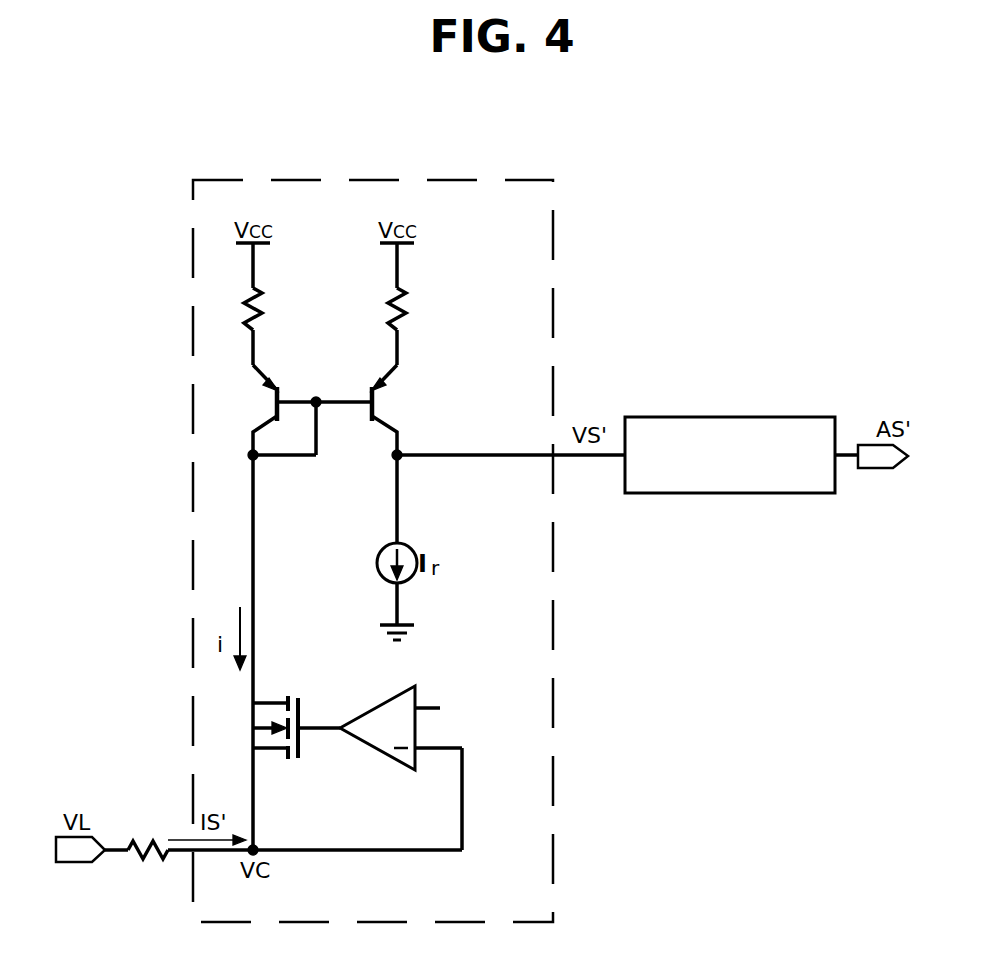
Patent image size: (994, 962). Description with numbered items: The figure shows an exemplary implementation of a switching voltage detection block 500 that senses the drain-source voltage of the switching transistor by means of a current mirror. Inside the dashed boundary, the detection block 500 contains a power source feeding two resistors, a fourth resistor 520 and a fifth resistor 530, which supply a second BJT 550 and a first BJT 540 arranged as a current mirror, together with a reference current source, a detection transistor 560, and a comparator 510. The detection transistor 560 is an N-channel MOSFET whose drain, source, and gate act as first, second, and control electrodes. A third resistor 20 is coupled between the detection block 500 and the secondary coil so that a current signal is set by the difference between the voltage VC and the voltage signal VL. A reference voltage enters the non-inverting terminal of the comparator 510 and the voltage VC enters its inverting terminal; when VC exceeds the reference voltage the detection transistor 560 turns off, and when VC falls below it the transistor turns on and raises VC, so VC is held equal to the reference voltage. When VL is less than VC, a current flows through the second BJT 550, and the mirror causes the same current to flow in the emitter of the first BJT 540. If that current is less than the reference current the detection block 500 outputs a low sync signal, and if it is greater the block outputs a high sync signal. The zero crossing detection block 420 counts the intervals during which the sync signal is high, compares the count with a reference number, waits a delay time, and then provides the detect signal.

The switching voltage detection block 500 is at (553, 300).
The resistor R4 520 is at (255, 291).
The resistor R5 530 is at (400, 320).
The first BJT 540 is at (377, 387).
The second BJT 550 is at (268, 386).
The comparator 510 is at (378, 708).
The detection transistor 560 is at (291, 760).
The zero crossing detection block 420 is at (798, 417).
The resistor R3 20 is at (130, 856).